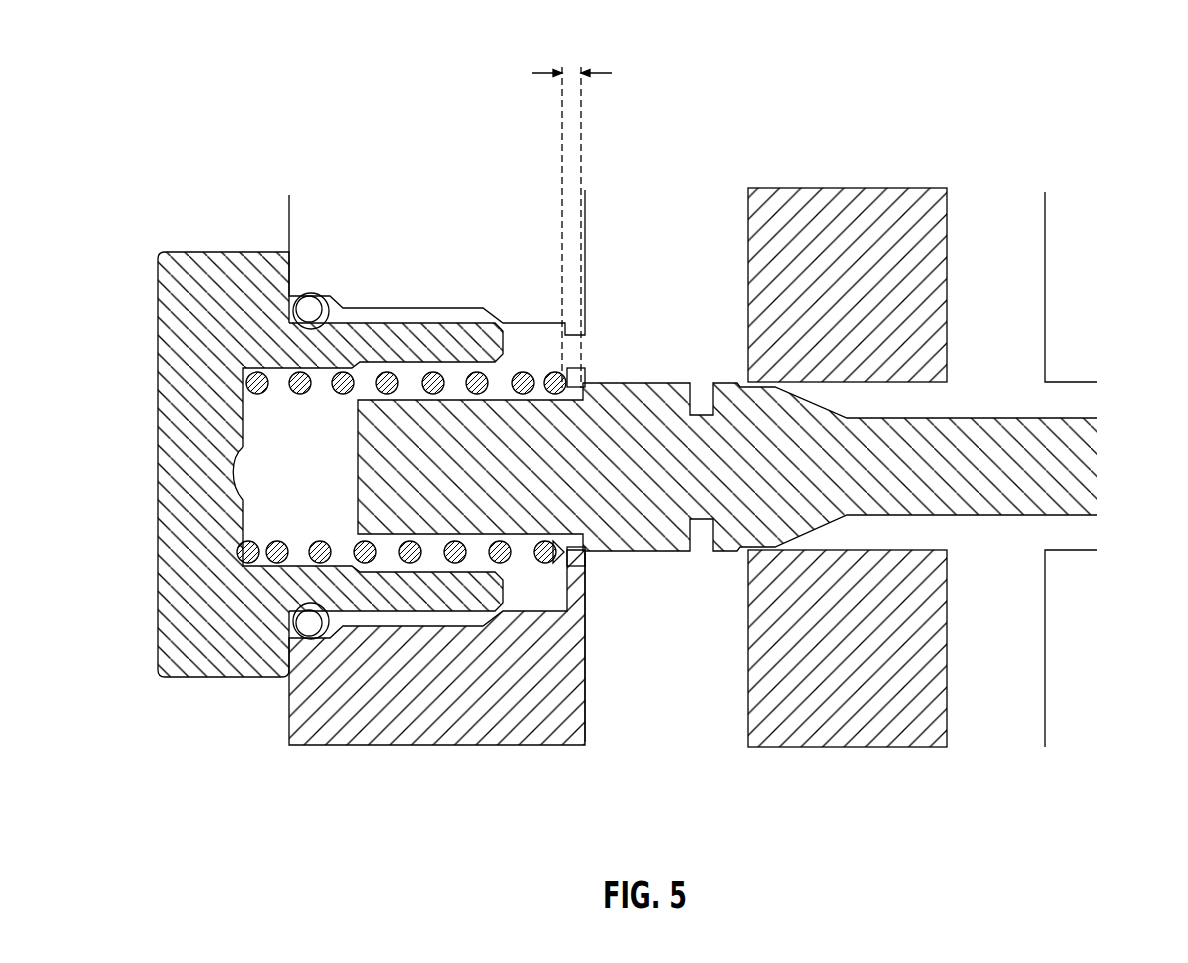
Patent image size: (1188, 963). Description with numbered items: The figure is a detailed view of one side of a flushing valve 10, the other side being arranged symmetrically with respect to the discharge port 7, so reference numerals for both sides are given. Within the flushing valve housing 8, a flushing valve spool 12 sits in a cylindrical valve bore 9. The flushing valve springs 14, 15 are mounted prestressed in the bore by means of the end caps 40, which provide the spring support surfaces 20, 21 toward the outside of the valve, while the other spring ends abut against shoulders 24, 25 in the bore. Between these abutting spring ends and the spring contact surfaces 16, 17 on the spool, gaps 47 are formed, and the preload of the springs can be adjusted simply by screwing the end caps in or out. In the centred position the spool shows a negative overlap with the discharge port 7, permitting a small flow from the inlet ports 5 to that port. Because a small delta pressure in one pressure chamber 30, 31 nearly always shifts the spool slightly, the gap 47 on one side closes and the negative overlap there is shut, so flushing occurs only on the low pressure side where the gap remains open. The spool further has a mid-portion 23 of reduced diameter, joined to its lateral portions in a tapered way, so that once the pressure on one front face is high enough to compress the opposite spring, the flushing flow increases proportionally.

The inlet port 5 is at (655, 679).
The discharge port 7 is at (990, 231).
The flushing valve housing 8 is at (385, 695).
The cylindrical valve bore 9 is at (1068, 528).
The flushing valve 10 is at (612, 419).
The flushing valve spool 12 is at (761, 467).
The flushing valve spring 14 is at (373, 335).
The flushing valve spring 15 is at (388, 377).
The spring contact surface 16 is at (635, 467).
The spring contact surface 17 is at (570, 555).
The spring support surface 20 is at (285, 529).
The spring support surface 21 is at (243, 508).
The mid-portion 23 is at (880, 478).
The shoulder 24 is at (590, 673).
The shoulder 25 is at (566, 562).
The pressure chamber 30 is at (313, 385).
The pressure chamber 31 is at (406, 383).
The end cap 40 is at (177, 470).
The gap 47 is at (572, 113).